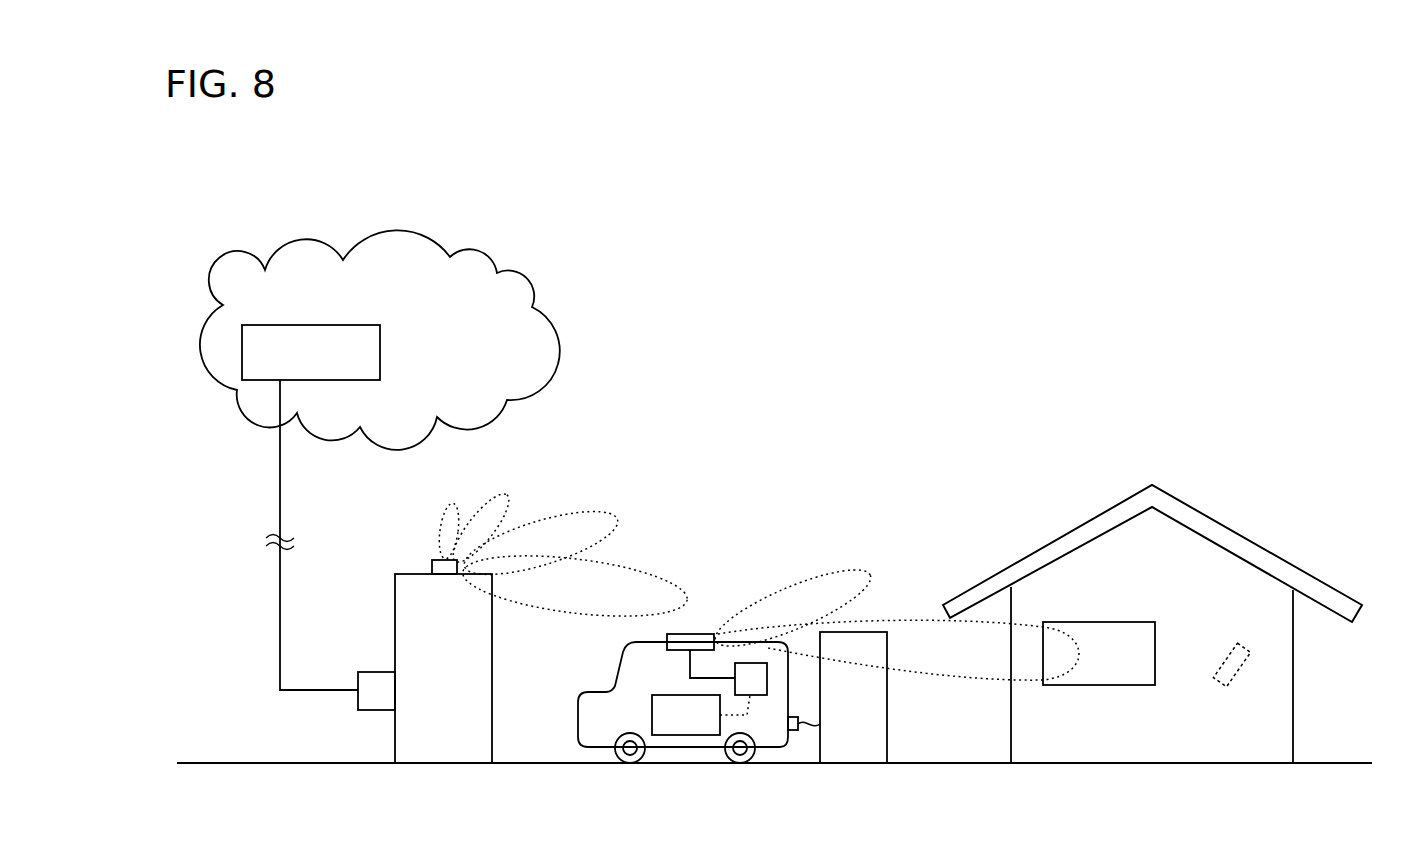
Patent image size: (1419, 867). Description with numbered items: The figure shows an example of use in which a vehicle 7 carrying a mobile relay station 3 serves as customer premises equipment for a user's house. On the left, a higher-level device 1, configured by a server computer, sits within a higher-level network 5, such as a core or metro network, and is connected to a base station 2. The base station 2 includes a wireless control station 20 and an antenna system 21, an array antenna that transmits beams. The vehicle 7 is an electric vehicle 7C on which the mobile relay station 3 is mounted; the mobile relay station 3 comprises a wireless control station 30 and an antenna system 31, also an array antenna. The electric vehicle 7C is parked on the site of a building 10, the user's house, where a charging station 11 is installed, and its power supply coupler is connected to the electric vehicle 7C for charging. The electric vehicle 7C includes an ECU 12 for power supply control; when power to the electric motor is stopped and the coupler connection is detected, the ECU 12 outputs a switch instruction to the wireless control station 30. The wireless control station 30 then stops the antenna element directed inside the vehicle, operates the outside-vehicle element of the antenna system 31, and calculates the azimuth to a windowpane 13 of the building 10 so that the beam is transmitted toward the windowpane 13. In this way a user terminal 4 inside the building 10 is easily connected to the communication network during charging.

The higher-level device 1 is at (242, 352).
The base station 2 is at (396, 654).
The mobile relay station 3 is at (724, 595).
The user terminal 4 is at (1252, 668).
The higher-level network 5 is at (397, 230).
The vehicle 7 is at (669, 702).
The electric vehicle 7C is at (620, 668).
The building 10 is at (1241, 539).
The charging station 11 is at (888, 733).
The ECU 12 is at (686, 736).
The windowpane 13 is at (1068, 622).
The wireless control station 20 is at (366, 657).
The antenna system 21 is at (432, 566).
The wireless control station 30 is at (755, 663).
The antenna system 31 is at (708, 634).